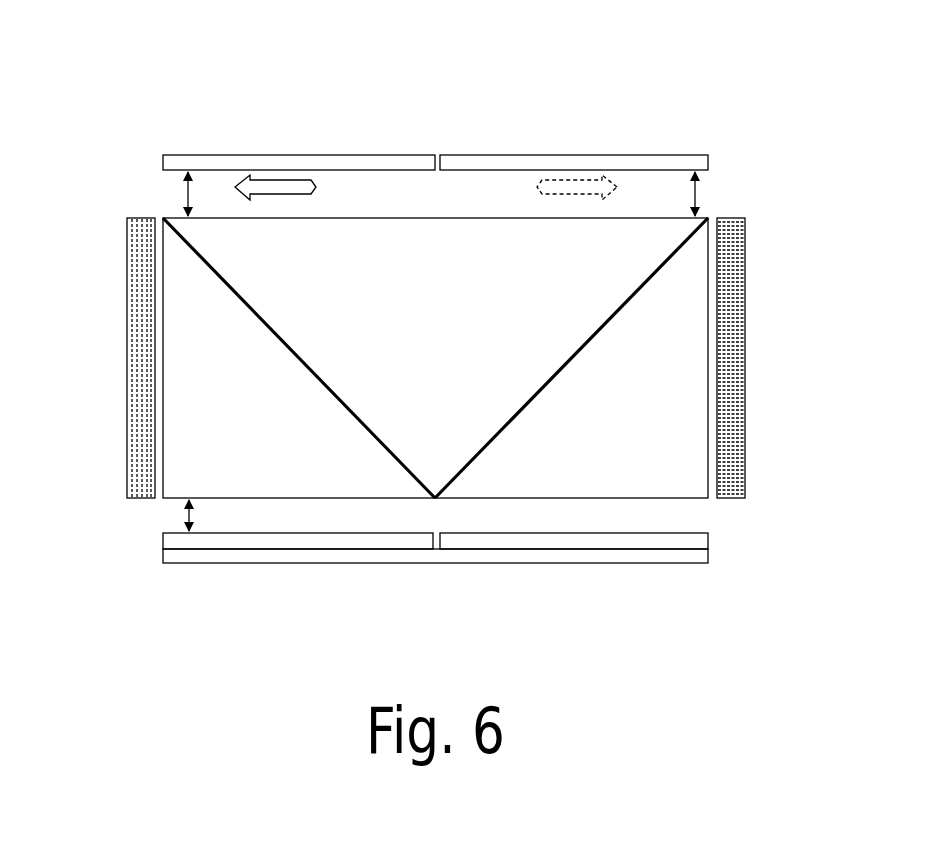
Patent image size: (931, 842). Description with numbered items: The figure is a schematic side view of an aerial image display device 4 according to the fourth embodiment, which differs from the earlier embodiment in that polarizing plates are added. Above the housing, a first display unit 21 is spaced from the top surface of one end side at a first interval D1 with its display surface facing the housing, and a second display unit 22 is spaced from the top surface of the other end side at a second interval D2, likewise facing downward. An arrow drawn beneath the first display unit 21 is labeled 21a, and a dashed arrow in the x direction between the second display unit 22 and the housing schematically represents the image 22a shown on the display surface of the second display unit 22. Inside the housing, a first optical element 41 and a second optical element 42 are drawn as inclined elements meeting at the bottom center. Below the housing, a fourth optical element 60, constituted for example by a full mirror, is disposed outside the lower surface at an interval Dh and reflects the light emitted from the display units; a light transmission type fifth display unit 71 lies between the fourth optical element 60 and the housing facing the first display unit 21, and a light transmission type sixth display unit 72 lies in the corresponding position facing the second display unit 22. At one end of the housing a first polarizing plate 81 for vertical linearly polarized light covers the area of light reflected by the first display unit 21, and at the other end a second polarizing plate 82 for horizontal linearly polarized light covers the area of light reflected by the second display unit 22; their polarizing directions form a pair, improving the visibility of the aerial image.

The aerial image display device 4 is at (464, 80).
The first display unit 21 is at (308, 154).
The second display unit 22 is at (581, 154).
The moving direction of first upper plate 21a is at (316, 187).
The image 22a is at (537, 184).
The first optical element 41 is at (277, 322).
The second optical element 42 is at (591, 322).
The fifth display unit 71 is at (300, 533).
The sixth display unit 72 is at (572, 533).
The fourth optical element 60 is at (298, 564).
The first polarizing plate 81 is at (127, 292).
The second polarizing plate 82 is at (745, 296).
The first interval D1 is at (173, 194).
The second interval D2 is at (710, 194).
The interval Dh is at (205, 515).